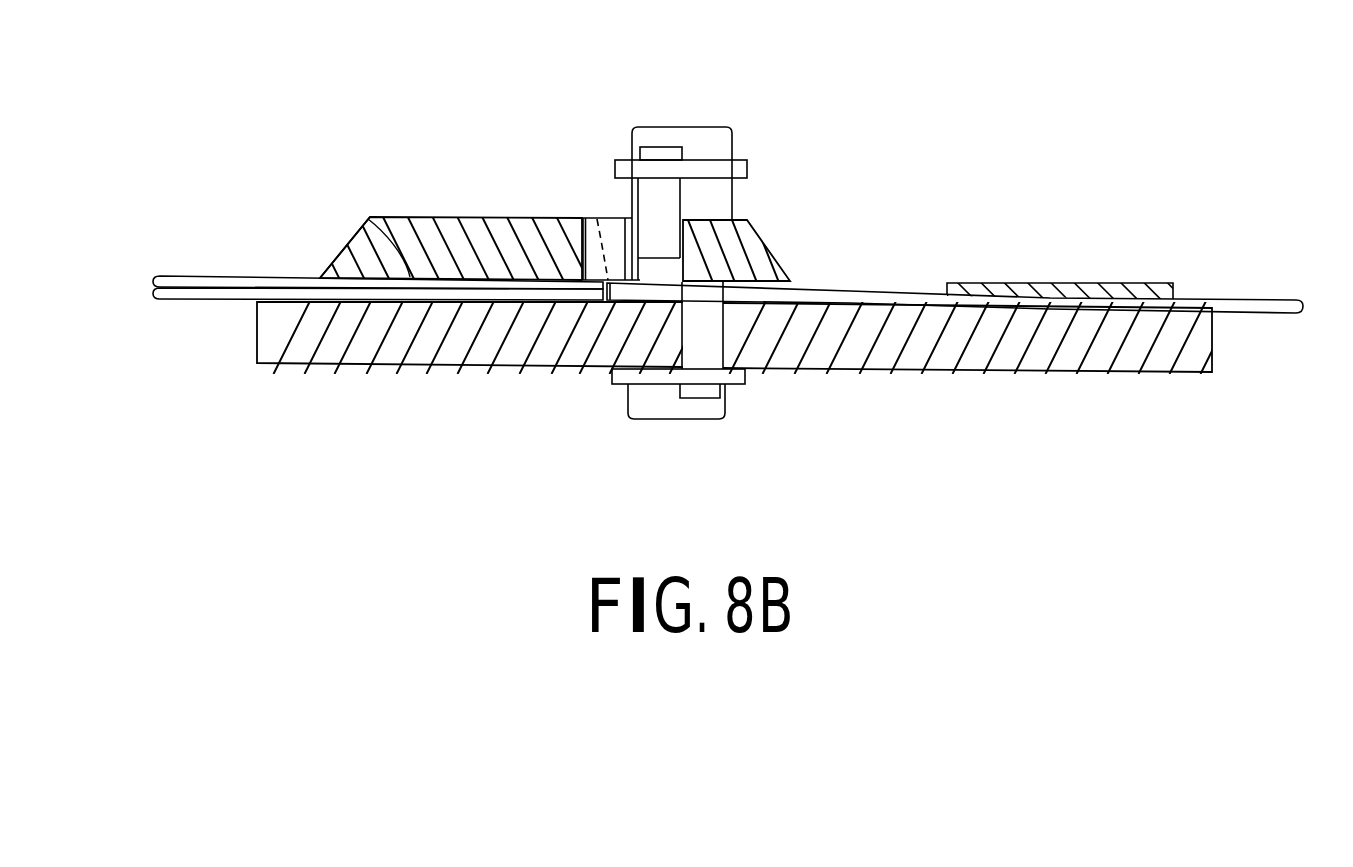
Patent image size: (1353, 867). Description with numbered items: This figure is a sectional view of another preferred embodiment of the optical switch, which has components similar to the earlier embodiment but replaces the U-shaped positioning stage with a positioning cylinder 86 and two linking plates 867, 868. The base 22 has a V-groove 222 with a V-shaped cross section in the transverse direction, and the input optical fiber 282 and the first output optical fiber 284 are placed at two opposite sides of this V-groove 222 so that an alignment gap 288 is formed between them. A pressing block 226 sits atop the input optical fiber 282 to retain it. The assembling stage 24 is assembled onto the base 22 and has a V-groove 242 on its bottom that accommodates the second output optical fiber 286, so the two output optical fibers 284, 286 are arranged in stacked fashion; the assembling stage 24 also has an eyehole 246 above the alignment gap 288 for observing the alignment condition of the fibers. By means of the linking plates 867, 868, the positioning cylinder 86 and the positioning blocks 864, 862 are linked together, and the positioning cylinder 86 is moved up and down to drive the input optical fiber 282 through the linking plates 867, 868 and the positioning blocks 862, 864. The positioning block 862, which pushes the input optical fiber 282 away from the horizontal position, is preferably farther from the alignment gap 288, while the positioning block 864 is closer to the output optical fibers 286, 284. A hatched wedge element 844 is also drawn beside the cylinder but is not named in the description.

The base 22 is at (1042, 345).
The V-groove 222 is at (870, 308).
The pressing block 226 is at (1056, 283).
The assembling stage 24 is at (450, 218).
The V-groove 242 is at (370, 217).
The eyehole 246 is at (580, 217).
The input optical fiber 282 is at (1237, 300).
The first output optical fiber 284 is at (190, 295).
The second output optical fiber 286 is at (192, 282).
The alignment gap 288 is at (598, 218).
The clamp wedge 844 is at (683, 264).
The positioning cylinder 86 is at (700, 127).
The positioning block 862 is at (698, 395).
The positioning block 864 is at (660, 147).
The linking plate 867 is at (740, 163).
The linking plate 868 is at (618, 378).